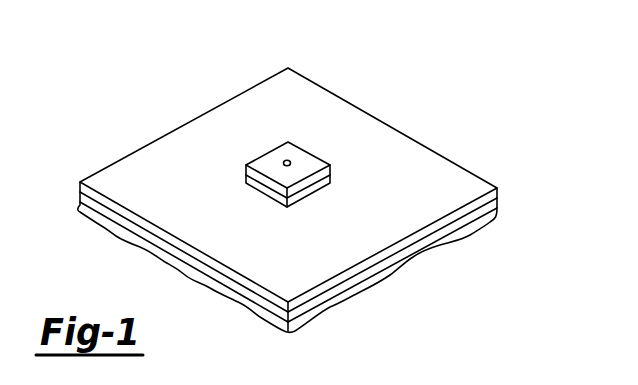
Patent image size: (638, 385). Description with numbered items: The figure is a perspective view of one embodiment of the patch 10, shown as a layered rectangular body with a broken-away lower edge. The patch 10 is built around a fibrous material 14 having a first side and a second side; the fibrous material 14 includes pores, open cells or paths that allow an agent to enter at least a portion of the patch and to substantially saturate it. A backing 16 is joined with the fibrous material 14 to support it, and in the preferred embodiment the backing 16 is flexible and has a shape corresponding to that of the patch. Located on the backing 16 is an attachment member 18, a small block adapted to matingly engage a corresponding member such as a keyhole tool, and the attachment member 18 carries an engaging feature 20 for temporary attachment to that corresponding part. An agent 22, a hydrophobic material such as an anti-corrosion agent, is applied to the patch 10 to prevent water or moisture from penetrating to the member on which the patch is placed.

The patch 10 is at (431, 111).
The fibrous material 14 is at (490, 206).
The backing 16 is at (320, 105).
The attachment member 18 is at (267, 159).
The engaging feature 20 is at (290, 166).
The agent 22 is at (403, 265).